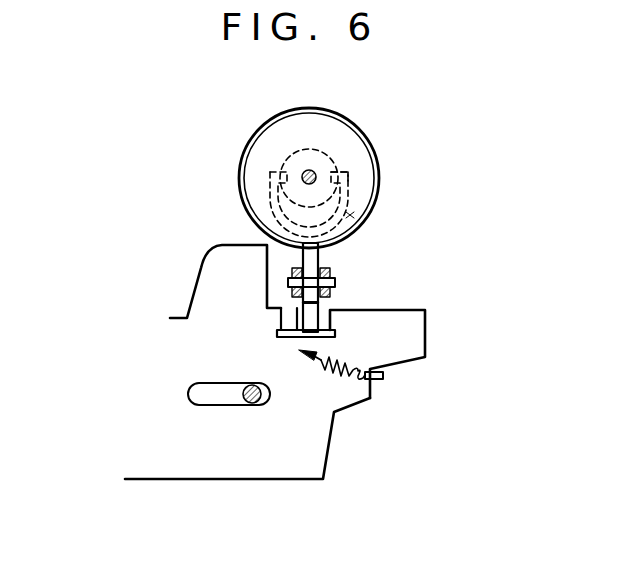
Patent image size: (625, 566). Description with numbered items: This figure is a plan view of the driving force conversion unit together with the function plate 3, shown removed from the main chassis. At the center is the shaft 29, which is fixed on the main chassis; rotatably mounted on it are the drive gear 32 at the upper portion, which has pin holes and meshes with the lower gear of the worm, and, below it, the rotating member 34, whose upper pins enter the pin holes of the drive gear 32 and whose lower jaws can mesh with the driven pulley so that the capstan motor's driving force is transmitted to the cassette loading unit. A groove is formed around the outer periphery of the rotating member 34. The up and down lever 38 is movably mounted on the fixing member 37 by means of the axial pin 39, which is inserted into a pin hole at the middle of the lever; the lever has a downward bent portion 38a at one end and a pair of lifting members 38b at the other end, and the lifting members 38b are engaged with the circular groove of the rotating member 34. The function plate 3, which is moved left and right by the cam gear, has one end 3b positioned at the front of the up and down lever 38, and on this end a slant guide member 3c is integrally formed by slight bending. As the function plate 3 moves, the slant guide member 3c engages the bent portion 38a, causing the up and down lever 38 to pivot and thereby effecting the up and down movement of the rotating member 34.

The function plate 3 is at (213, 470).
The one end of the function plate 3b is at (421, 342).
The slant guide member 3c is at (289, 324).
The shaft 29 is at (302, 177).
The drive gear 32 is at (377, 150).
The rotating member 34 is at (318, 149).
The fixing member 37 is at (319, 265).
The up and down lever 38 is at (351, 214).
The downward bent portion 38a is at (316, 322).
The lifting members 38b is at (337, 172).
The axial pin 39 is at (337, 287).